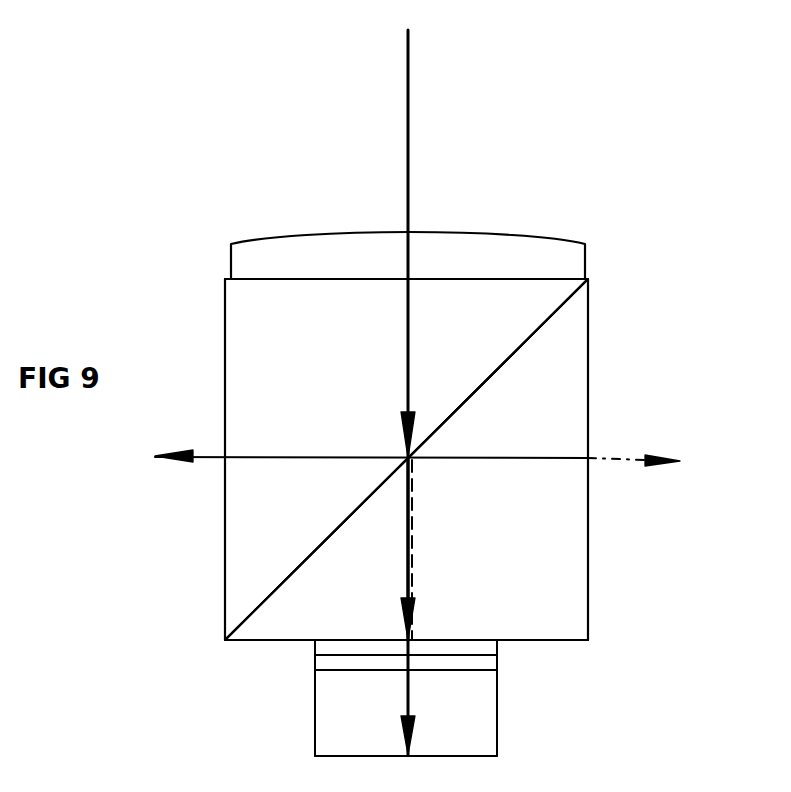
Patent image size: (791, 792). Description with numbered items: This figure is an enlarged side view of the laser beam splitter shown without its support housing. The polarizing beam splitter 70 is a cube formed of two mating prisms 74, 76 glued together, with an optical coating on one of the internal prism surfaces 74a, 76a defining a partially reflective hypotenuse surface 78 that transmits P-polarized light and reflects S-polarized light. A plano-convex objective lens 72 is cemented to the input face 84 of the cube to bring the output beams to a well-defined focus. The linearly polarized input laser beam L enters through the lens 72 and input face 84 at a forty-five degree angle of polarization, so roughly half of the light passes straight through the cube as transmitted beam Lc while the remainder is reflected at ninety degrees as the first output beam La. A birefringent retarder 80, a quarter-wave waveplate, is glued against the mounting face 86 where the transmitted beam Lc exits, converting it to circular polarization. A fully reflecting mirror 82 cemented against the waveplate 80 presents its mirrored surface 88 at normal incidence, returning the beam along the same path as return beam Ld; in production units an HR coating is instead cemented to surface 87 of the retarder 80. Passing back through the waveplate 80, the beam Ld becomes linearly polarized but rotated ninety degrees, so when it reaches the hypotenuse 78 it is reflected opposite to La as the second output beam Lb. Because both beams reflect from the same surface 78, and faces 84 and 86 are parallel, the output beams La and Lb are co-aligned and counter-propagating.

The polarizing beam splitter 70 is at (592, 409).
The plano-convex objective lens 72 is at (497, 232).
The prism 74 is at (537, 527).
The internal prism surface 74a is at (472, 392).
The prism 76 is at (272, 354).
The internal prism surface 76a is at (487, 377).
The partially reflective hypotenuse surface 78 is at (528, 338).
The birefringent retarder 80 is at (432, 662).
The mirror 82 is at (472, 703).
The input face 84 is at (522, 280).
The mounting face 86 is at (296, 643).
The surface of the phase retarder 87 is at (373, 672).
The mirrored surface 88 is at (450, 756).
The input laser beam L is at (412, 155).
The first reflected output beam La is at (213, 458).
The second output beam Lb is at (620, 458).
The transmitted beam Lc is at (407, 540).
The return beam Ld is at (413, 540).